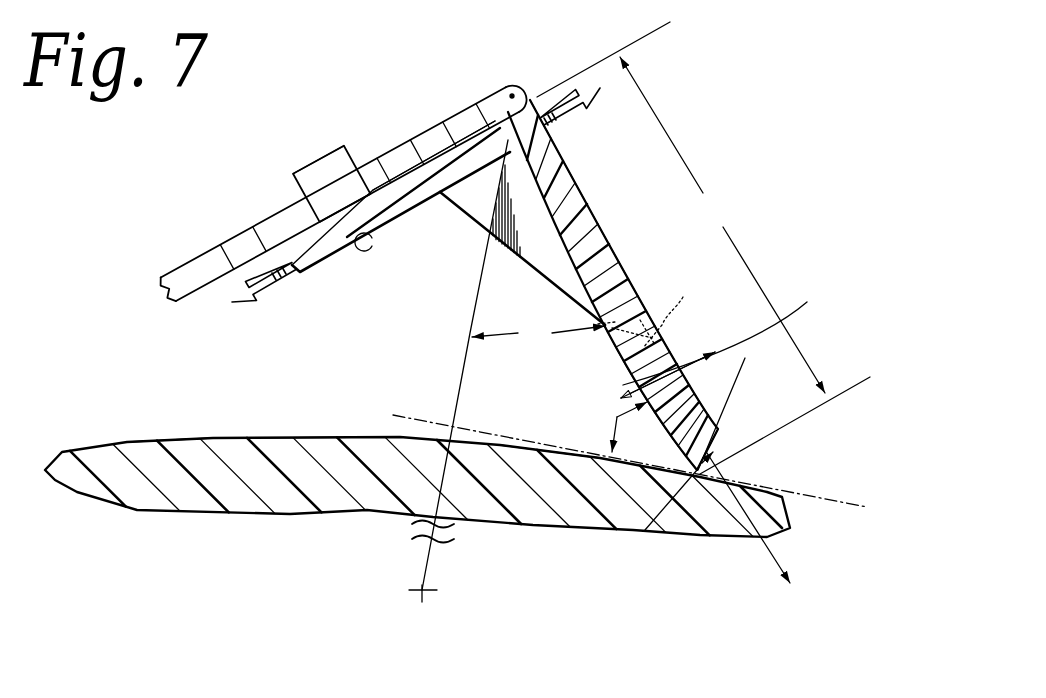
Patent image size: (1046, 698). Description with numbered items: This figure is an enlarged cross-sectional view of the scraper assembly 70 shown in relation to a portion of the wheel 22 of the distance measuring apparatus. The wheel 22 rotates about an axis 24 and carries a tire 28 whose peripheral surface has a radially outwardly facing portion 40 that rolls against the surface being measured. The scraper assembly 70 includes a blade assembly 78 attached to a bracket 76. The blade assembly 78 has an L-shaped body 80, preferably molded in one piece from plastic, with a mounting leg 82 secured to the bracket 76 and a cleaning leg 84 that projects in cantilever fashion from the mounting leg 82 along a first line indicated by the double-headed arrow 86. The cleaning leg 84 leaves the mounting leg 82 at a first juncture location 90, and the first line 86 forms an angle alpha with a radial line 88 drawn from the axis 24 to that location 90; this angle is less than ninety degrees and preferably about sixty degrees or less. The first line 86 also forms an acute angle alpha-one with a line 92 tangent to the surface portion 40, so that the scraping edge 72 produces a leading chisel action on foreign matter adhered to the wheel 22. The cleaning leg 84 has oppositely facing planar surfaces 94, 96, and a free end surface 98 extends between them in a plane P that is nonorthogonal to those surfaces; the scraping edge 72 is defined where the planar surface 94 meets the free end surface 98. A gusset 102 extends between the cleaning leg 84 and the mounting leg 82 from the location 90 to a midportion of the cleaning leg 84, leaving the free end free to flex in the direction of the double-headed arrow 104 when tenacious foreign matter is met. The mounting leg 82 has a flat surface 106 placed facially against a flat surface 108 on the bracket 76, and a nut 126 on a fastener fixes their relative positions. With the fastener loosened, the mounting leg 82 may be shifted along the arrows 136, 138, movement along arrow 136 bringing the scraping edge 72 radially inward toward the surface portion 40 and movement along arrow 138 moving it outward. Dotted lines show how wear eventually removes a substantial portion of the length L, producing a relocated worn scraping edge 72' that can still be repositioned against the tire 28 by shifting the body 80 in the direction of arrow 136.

The wheel 22 is at (230, 497).
The axis 24 is at (425, 590).
The tire 28 is at (195, 443).
The radially outwardly facing portion 40 is at (517, 448).
The scraper assembly 70 is at (537, 78).
The scraping edge 72 is at (643, 532).
The scraping edge (worn state) 72' is at (654, 309).
The bracket 76 is at (292, 200).
The blade assembly 78 is at (566, 168).
The L-shaped body 80 is at (567, 207).
The mounting leg 82 is at (400, 170).
The cleaning leg 84 is at (592, 232).
The first line (double-headed arrow) 86 is at (777, 558).
The radial line 88 is at (462, 381).
The first juncture location 90 is at (506, 148).
The tangent line 92 is at (848, 500).
The first planar surface 94 is at (667, 348).
The second planar surface 96 is at (602, 260).
The free end surface 98 is at (718, 443).
The gusset 102 is at (550, 262).
The double-headed arrow (flexing direction) 104 is at (807, 302).
The flat surface 106 is at (438, 140).
The flat surface 108 is at (350, 252).
The nut 126 is at (336, 148).
The arrow 136 is at (232, 236).
The arrow 138 is at (570, 112).
The length L is at (722, 225).
The plane P is at (724, 404).